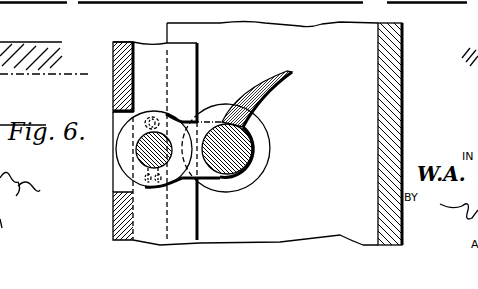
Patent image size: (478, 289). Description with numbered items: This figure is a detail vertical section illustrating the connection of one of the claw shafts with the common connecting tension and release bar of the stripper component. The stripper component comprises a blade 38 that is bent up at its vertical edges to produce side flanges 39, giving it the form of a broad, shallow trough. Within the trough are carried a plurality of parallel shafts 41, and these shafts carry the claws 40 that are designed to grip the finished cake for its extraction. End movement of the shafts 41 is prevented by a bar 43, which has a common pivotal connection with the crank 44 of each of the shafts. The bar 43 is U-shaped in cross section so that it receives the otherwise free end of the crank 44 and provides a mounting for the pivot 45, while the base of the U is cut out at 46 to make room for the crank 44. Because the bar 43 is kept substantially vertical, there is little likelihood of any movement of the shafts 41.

The blade 38 is at (395, 133).
The side flanges 39 is at (317, 38).
The claws 40 is at (268, 84).
The shafts 41 is at (252, 155).
The bar 43 is at (114, 78).
The crank 44 is at (138, 168).
The pivot 45 is at (137, 150).
The cut-out 46 is at (122, 117).